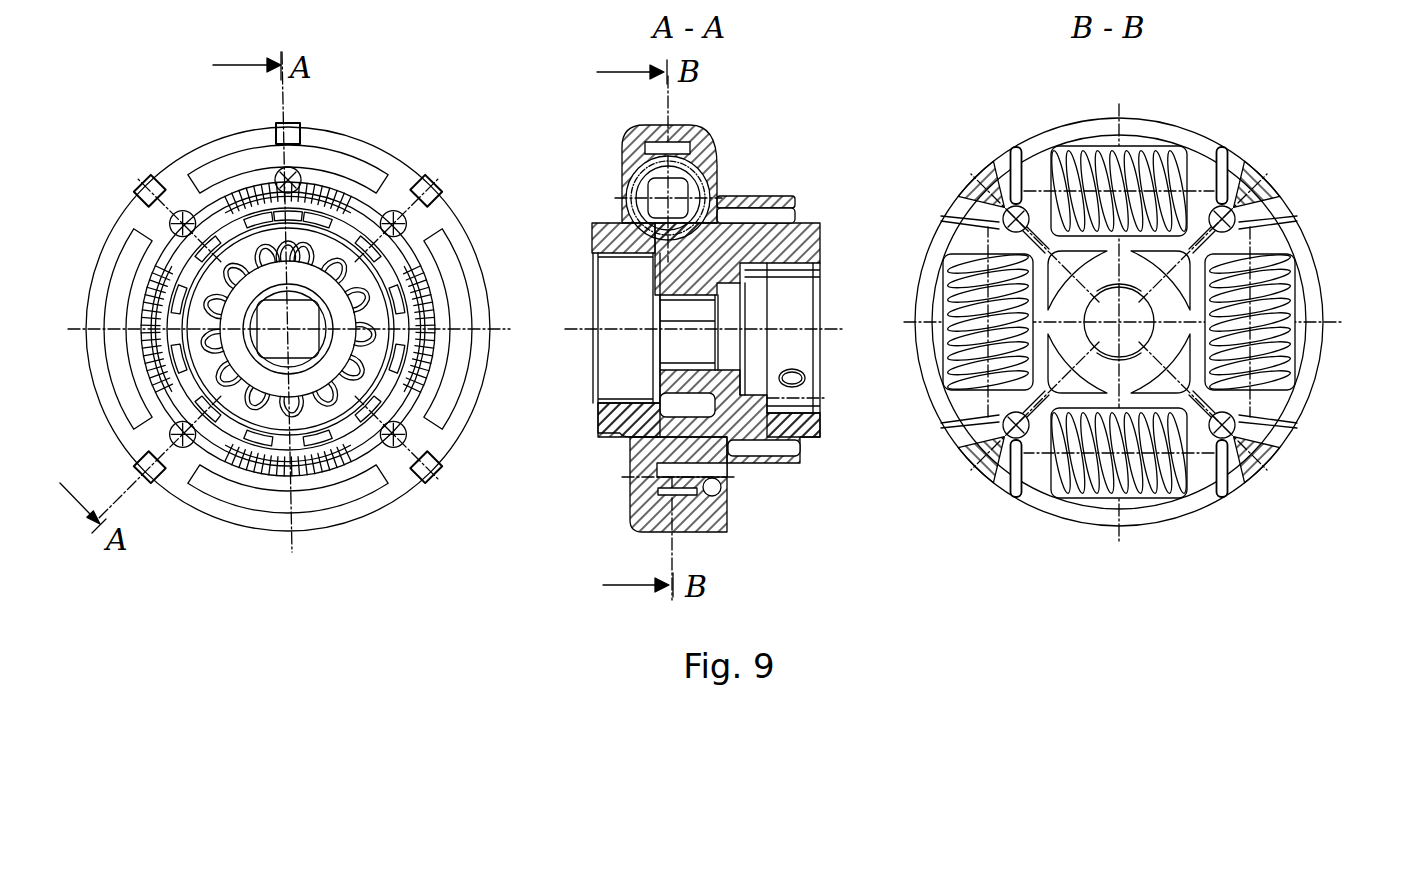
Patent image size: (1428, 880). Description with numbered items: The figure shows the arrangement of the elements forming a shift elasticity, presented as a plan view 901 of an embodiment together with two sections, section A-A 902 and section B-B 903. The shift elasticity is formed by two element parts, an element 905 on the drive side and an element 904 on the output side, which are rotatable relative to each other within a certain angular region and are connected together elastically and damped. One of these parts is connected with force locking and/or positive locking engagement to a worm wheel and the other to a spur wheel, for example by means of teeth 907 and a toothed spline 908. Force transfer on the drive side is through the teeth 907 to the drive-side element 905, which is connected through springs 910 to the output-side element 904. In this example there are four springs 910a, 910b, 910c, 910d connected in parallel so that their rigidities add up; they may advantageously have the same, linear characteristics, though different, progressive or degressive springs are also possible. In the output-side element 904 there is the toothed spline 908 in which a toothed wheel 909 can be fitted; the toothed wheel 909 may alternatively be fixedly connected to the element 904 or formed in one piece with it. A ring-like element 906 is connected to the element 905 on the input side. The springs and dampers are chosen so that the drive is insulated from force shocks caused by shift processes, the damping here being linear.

The plan view 901 is at (252, 580).
The section A-A 902 is at (783, 172).
The section B-B 903 is at (1184, 572).
The element part on the output side 904 is at (799, 416).
The element part on the drive side 905 is at (427, 480).
The ring-like element 906 is at (714, 150).
The teeth 907 is at (616, 262).
The toothed spline 908 is at (787, 266).
The toothed wheel 909 is at (260, 250).
The springs 910 is at (632, 186).
The spring 910a is at (1108, 498).
The spring 910b is at (957, 282).
The spring 910c is at (1072, 155).
The spring 910d is at (1283, 356).